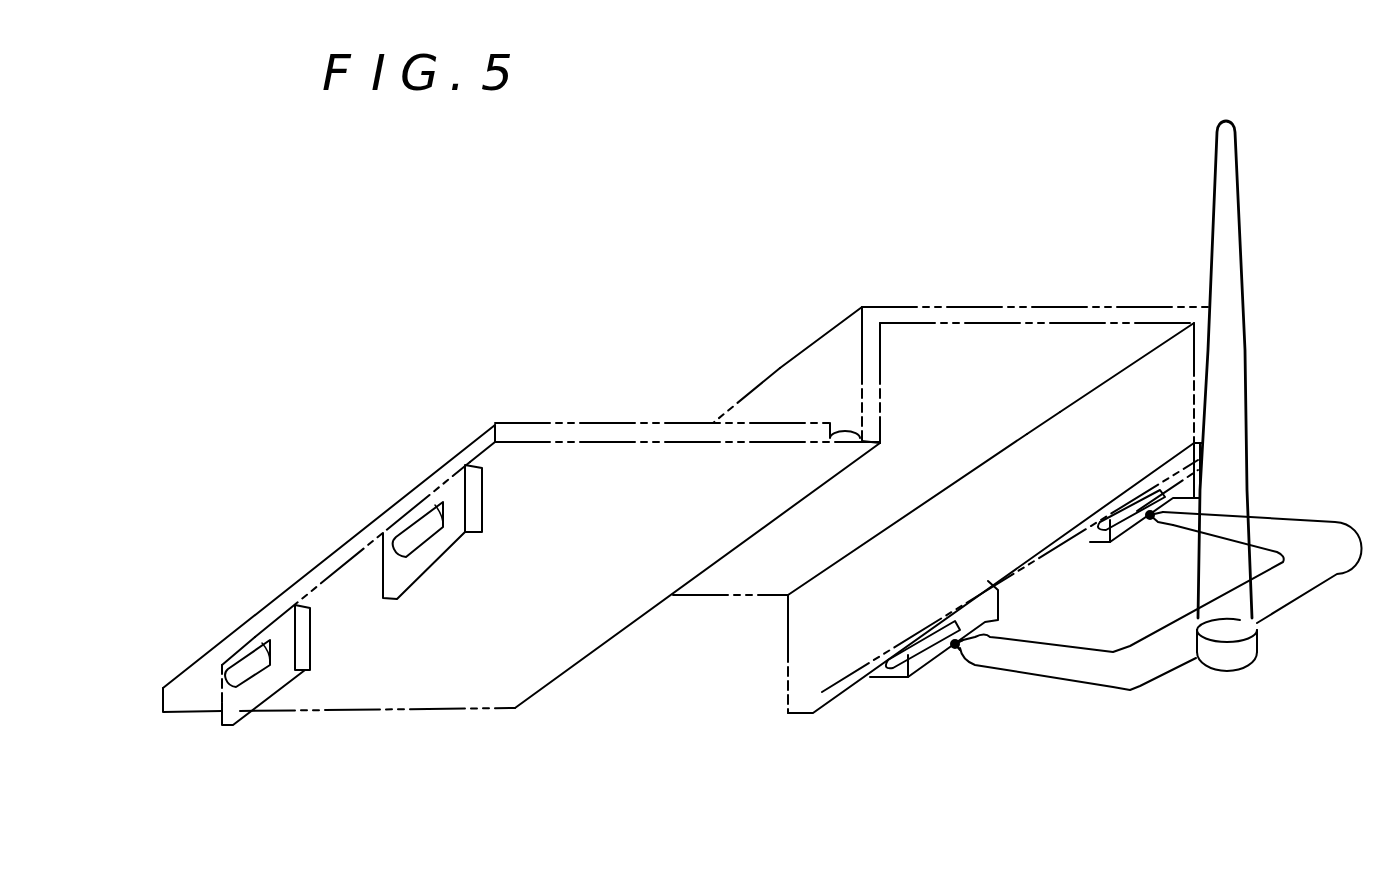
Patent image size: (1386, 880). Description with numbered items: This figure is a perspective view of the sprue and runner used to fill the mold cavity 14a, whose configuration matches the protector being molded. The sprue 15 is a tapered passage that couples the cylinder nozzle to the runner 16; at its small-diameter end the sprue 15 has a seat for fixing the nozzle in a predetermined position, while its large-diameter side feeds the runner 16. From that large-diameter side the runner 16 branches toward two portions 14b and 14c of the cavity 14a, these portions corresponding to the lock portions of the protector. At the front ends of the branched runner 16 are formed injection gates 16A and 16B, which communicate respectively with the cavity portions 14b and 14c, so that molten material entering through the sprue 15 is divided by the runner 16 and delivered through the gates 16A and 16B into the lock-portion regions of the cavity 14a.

The cavity 14a is at (927, 307).
The cavity portion corresponding to a lock portion 14b is at (1127, 527).
The cavity portion corresponding to a lock portion 14c is at (925, 662).
The sprue 15 is at (1245, 330).
The runner 16 is at (1163, 672).
The injection gate 16A is at (1165, 513).
The injection gate 16B is at (960, 650).